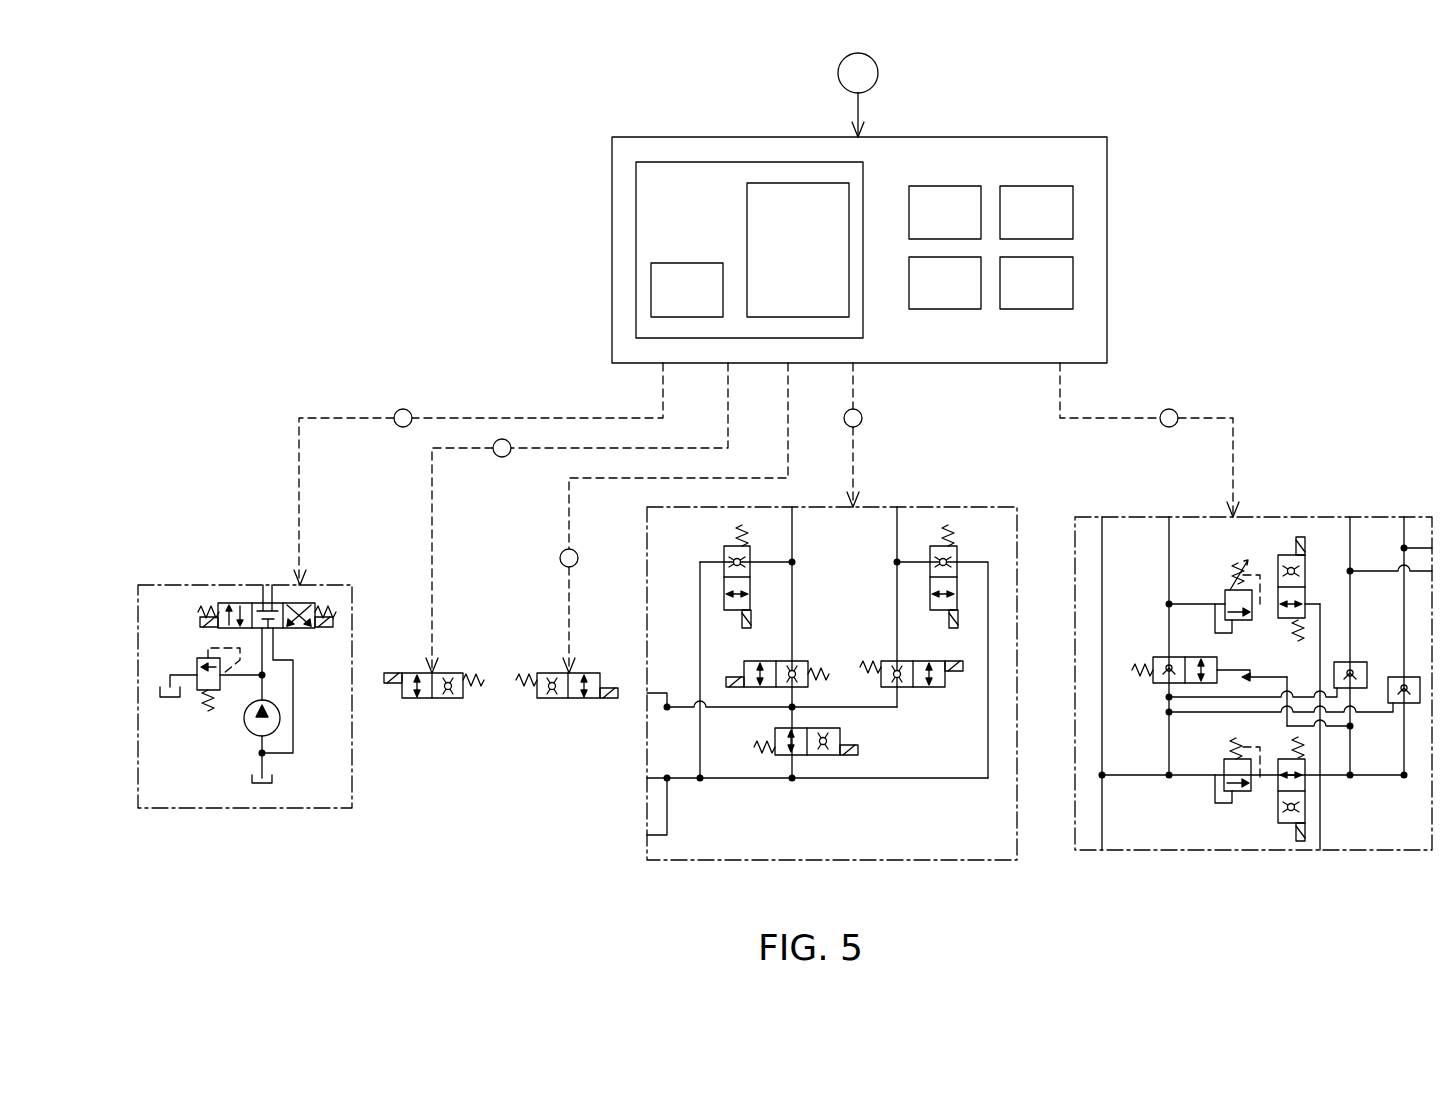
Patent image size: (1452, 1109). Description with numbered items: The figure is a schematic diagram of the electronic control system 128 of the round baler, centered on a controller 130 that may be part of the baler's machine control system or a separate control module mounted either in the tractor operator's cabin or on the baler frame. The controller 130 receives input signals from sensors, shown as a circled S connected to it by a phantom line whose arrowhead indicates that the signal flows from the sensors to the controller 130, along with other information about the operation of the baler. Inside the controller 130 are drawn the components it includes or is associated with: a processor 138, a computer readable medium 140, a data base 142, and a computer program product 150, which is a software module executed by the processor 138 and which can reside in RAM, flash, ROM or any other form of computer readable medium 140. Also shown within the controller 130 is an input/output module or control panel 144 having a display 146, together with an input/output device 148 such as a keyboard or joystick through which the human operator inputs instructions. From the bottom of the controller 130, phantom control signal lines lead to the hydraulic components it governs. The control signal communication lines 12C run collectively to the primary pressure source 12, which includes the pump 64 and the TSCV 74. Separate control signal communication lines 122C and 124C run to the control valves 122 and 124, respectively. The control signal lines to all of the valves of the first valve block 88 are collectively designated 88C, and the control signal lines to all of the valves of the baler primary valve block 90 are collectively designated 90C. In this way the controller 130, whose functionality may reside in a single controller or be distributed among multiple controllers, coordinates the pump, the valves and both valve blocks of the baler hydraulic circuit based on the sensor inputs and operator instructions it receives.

The control system 128 is at (493, 97).
The controller 130 is at (1024, 137).
The input/output module or control panel 144 is at (863, 197).
The display 146 is at (747, 222).
The input/output device 148 is at (672, 288).
The processor 138 is at (968, 224).
The computer readable medium 140 is at (1060, 224).
The data base 142 is at (968, 295).
The computer program product 150 is at (1060, 295).
The control signal communication lines 12C is at (403, 409).
The control signal communication line 124C is at (502, 457).
The control signal communication line 122C is at (560, 562).
The control signal lines 88C is at (862, 418).
The control signal lines 90C is at (1170, 409).
The primary pressure source 12 is at (255, 808).
The TSCV 74 is at (225, 630).
The pump 64 is at (248, 740).
The control valve 124 is at (425, 700).
The control valve 122 is at (560, 700).
The first valve block 88 is at (955, 862).
The baler primary valve block 90 is at (1187, 852).